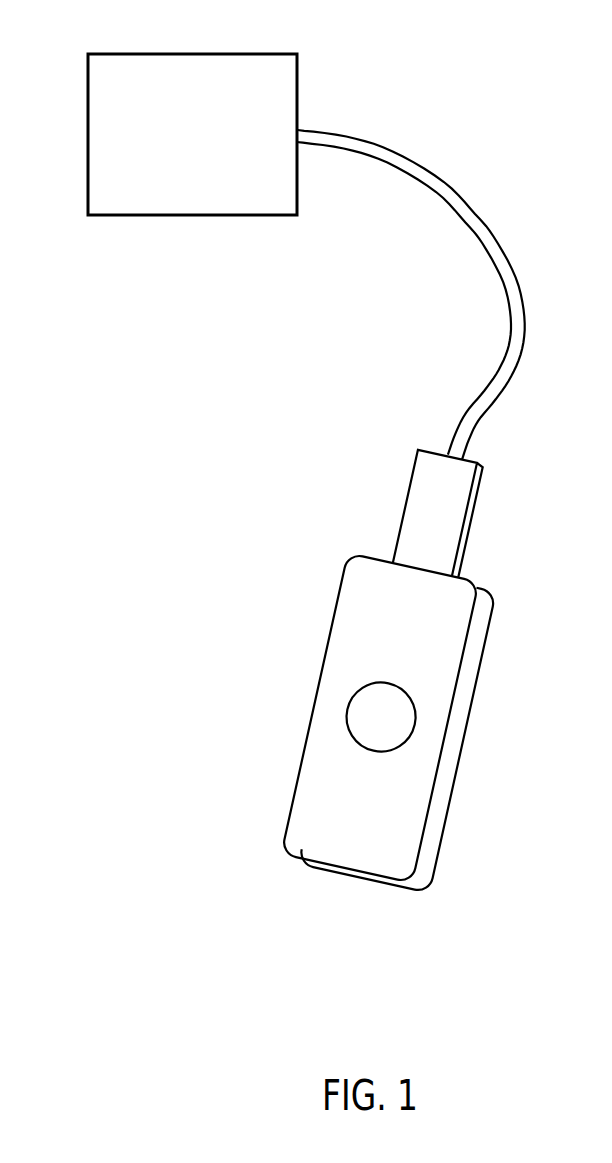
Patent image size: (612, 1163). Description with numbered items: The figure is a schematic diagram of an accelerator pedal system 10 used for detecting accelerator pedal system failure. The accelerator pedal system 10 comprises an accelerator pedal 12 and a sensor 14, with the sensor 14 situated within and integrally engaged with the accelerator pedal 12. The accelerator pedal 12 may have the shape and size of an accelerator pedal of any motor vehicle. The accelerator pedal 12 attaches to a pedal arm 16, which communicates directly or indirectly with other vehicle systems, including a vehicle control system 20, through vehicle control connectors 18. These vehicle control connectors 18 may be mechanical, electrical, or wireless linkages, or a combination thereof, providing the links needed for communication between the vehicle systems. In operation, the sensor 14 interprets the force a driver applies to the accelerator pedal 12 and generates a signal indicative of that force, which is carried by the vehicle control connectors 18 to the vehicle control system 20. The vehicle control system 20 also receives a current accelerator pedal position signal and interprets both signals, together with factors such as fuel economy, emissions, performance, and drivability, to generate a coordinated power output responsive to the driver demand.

The accelerator pedal system 10 is at (429, 727).
The accelerator pedal 12 is at (468, 675).
The sensor 14 is at (397, 723).
The pedal arm 16 is at (478, 513).
The vehicle control connectors 18 is at (452, 184).
The vehicle control system 20 is at (168, 53).